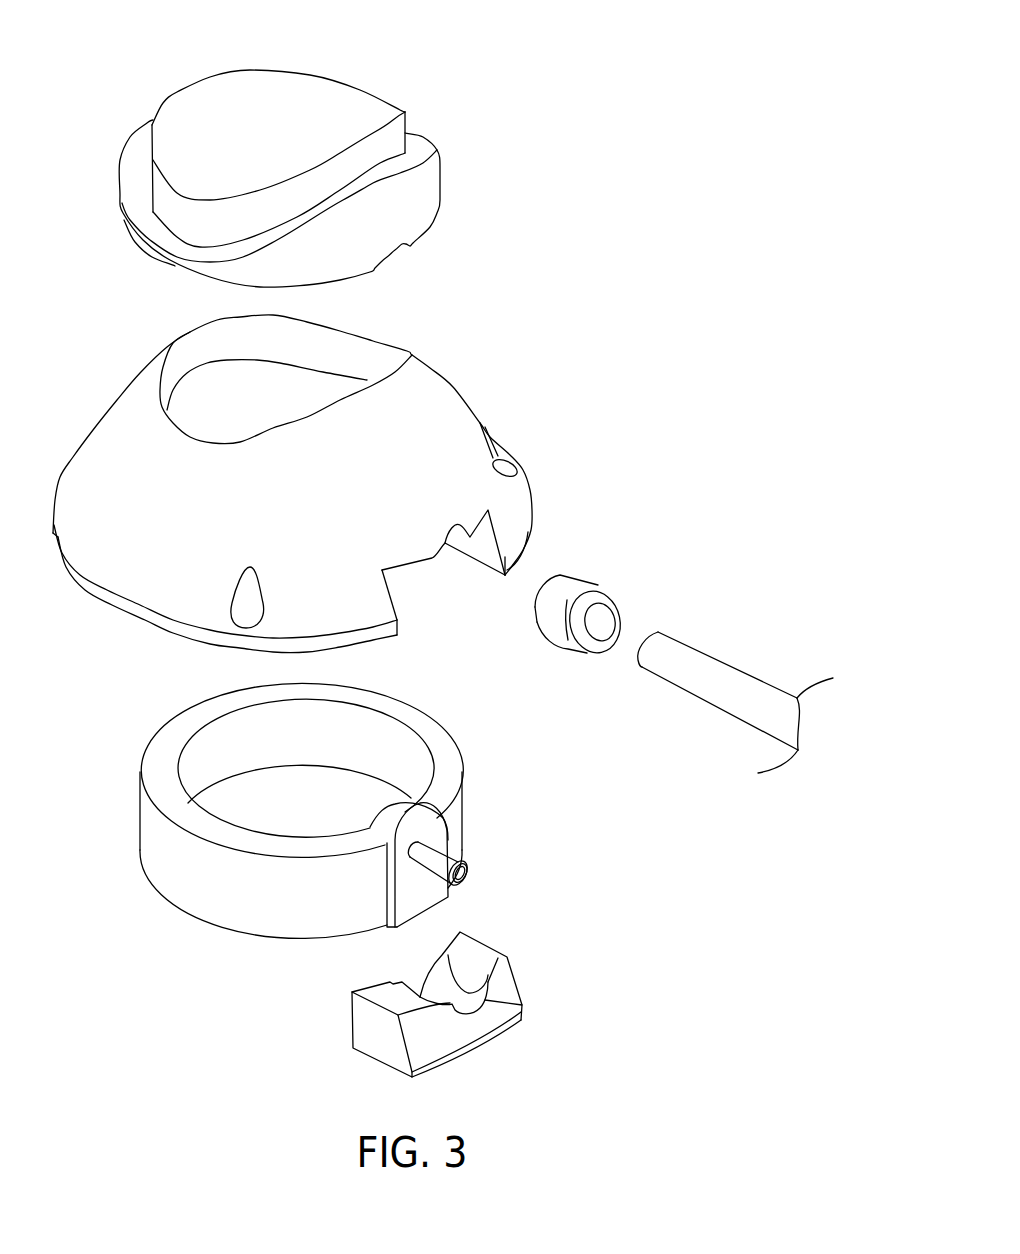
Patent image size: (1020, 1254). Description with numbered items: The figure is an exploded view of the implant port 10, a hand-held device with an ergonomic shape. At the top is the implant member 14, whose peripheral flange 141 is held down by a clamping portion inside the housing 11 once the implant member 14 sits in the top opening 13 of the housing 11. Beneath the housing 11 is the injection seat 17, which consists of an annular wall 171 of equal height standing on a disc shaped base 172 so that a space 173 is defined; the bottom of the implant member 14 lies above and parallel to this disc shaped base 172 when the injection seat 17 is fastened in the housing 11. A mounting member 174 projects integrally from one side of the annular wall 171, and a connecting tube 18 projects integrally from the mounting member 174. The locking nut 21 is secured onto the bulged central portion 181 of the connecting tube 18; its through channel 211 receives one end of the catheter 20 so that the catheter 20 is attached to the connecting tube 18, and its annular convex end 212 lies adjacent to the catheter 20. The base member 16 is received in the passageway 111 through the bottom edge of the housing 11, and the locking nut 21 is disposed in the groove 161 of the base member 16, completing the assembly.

The implant port 10 is at (622, 226).
The housing 11 is at (457, 387).
The passageway 111 is at (440, 583).
The top opening 13 is at (258, 395).
The implant member 14 is at (257, 113).
The peripheral flange 141 is at (408, 200).
The base member 16 is at (467, 1010).
The groove 161 is at (460, 987).
The injection seat 17 is at (314, 825).
The annular wall 171 is at (442, 757).
The disc shaped base 172 is at (325, 792).
The space 173 is at (255, 750).
The mounting member 174 is at (408, 900).
The connecting tube 18 is at (453, 866).
The bulged central portion 181 is at (437, 867).
The catheter 20 is at (717, 653).
The locking nut 21 is at (628, 580).
The through channel 211 is at (603, 623).
The annular convex end 212 is at (607, 597).